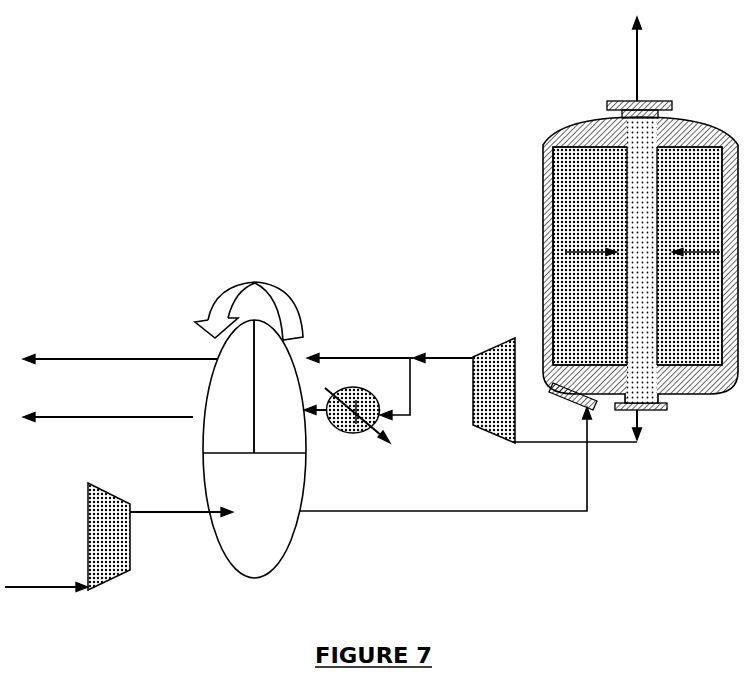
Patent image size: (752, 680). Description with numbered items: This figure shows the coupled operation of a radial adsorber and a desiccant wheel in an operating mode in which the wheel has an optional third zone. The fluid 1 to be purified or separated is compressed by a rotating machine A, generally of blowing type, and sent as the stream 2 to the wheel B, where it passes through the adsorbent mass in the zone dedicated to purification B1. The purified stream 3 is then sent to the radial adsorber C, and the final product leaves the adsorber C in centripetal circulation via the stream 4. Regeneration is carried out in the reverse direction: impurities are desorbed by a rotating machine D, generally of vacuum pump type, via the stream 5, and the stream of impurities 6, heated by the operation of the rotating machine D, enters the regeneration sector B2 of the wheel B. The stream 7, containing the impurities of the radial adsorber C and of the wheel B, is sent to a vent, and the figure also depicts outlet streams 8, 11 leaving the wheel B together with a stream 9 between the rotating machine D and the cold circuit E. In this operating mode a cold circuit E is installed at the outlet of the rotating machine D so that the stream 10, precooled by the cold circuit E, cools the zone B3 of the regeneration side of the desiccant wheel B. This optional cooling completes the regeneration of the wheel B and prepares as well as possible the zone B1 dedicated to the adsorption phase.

The fluid to be purified 1 is at (46, 581).
The stream 2 is at (181, 505).
The purified stream 3 is at (445, 459).
The stream 4 is at (651, 59).
The stream 5 is at (578, 426).
The stream of impurities 6 is at (443, 351).
The stream 7 is at (360, 351).
The first outlet stream 8 is at (120, 352).
The stream to heat exchanger 9 is at (405, 389).
The stream 10 is at (315, 403).
The second outlet stream 11 is at (108, 410).
The rotating machine A is at (109, 536).
The wheel B is at (250, 451).
The zone dedicated to purification B1 is at (254, 486).
The regeneration sector B2 is at (234, 386).
The zone B3 is at (270, 386).
The adsorber C is at (640, 270).
The rotating machine D is at (494, 390).
The cold circuit E is at (357, 415).